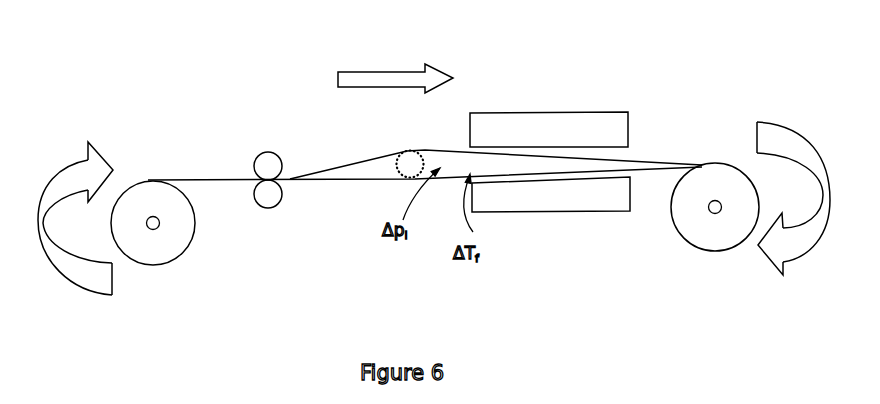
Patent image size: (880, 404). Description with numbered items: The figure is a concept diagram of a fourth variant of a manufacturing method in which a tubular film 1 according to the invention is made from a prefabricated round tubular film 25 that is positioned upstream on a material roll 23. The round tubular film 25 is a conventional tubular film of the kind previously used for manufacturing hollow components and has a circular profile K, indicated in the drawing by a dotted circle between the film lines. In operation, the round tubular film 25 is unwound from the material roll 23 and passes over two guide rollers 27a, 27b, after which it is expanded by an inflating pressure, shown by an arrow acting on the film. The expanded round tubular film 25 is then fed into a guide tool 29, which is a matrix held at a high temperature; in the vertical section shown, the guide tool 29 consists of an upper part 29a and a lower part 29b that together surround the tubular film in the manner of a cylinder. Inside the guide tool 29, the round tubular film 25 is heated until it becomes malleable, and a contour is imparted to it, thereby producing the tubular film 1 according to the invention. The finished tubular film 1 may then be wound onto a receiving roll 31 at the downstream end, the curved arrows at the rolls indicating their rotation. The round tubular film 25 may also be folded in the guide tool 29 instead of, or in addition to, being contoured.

The tubular film 1 is at (656, 160).
The material roll 23 is at (172, 262).
The round tubular film 25 is at (232, 178).
The guide roller 27a is at (281, 152).
The guide roller 27b is at (282, 194).
The guide tool 29 is at (550, 143).
The upper part 29a is at (548, 113).
The lower part 29b is at (547, 212).
The receiving roll 31 is at (707, 248).
The circular profile K is at (420, 150).